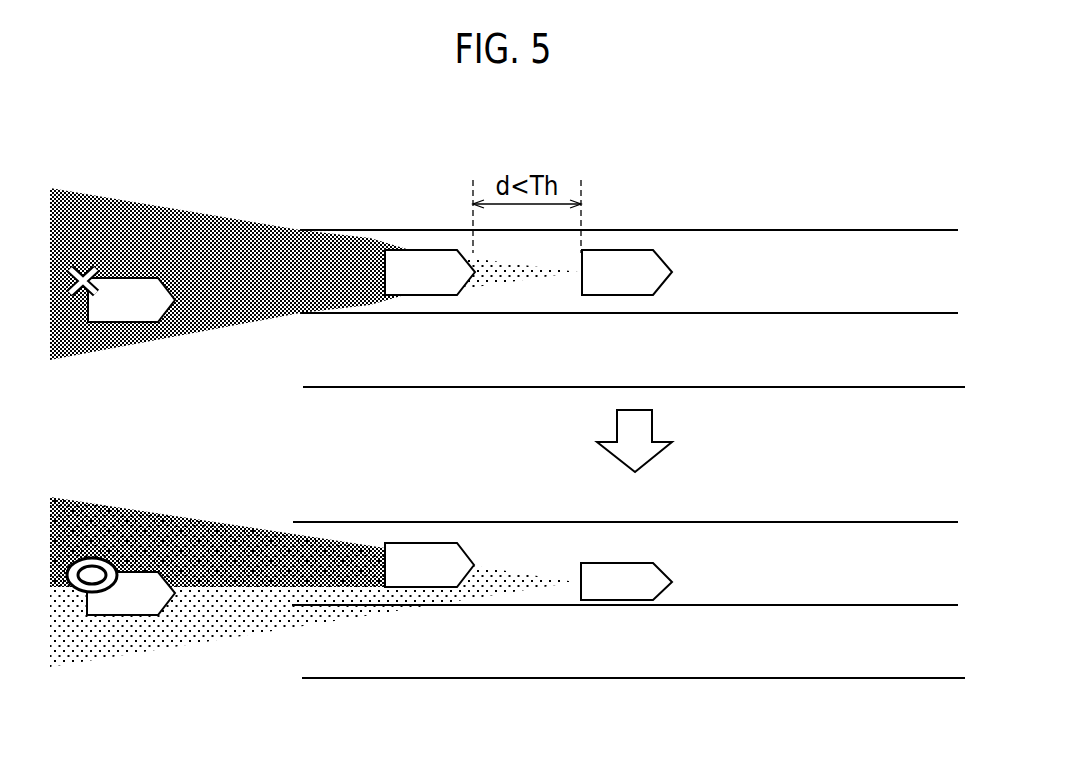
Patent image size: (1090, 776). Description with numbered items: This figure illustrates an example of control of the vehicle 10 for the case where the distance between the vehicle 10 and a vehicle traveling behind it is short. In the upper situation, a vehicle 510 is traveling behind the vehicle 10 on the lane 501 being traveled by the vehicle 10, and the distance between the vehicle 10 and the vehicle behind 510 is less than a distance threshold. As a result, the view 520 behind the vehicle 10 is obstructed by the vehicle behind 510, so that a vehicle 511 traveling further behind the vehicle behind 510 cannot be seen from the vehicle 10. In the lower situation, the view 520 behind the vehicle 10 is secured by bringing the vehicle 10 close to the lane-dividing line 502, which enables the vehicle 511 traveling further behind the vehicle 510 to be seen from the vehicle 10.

The vehicle 10 is at (620, 265).
The lane 501 is at (829, 252).
The lane-dividing line 502 is at (843, 607).
The vehicle behind 510 is at (418, 268).
The vehicle traveling further behind 511 is at (126, 314).
The view behind the vehicle 520 is at (503, 281).